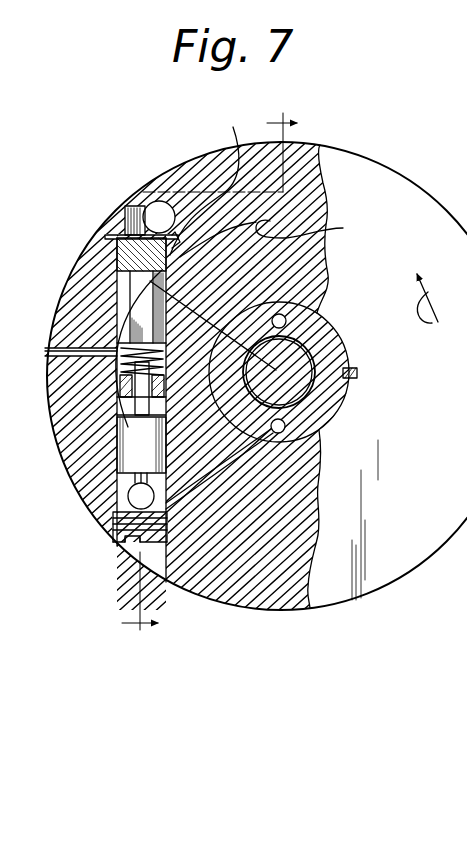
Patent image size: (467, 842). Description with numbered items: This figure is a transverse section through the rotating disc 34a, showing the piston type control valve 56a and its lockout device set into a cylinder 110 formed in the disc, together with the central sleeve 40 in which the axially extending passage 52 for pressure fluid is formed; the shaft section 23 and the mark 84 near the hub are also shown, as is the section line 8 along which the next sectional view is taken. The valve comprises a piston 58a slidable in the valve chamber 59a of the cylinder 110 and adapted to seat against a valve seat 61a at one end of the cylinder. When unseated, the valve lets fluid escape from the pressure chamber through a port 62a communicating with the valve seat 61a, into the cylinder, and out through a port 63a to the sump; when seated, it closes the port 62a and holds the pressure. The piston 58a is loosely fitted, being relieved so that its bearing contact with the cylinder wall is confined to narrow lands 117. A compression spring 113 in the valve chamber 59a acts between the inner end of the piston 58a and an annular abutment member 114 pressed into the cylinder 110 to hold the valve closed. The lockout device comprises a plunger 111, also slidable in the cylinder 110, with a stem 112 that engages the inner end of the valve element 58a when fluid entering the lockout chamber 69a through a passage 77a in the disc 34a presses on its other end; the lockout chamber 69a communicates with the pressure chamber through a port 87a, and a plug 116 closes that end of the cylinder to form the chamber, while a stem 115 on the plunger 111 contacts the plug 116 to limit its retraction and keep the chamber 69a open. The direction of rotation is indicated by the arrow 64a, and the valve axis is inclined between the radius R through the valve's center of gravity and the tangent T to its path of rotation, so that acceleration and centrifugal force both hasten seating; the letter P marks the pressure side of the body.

The section line 8- 8 is at (217, 374).
The shaft 23 is at (279, 372).
The disc 34a is at (342, 593).
The sleeve 40 is at (335, 397).
The axially extending passage 52 is at (278, 314).
The piston type valve 56a is at (110, 258).
The piston 58a is at (128, 280).
The valve chamber 59a is at (120, 333).
The valve seat 61a is at (128, 222).
The port 62a is at (161, 210).
The port 63a is at (112, 240).
The arrow 64a is at (435, 305).
The lockout chamber 69a is at (133, 488).
The passage 77a is at (213, 468).
The port 84 is at (278, 434).
The port 87a is at (140, 515).
The cylinder 110 is at (126, 460).
The plunger 111 is at (117, 470).
The stem 112 is at (140, 399).
The compression spring 113 is at (117, 366).
The annular abutment member 114 is at (118, 388).
The stem 115 is at (130, 517).
The plug 116 is at (121, 542).
The lands 117 is at (136, 300).
The pressure chamber P is at (267, 238).
The radius / path of rotation R is at (198, 327).
The tangent T is at (204, 184).